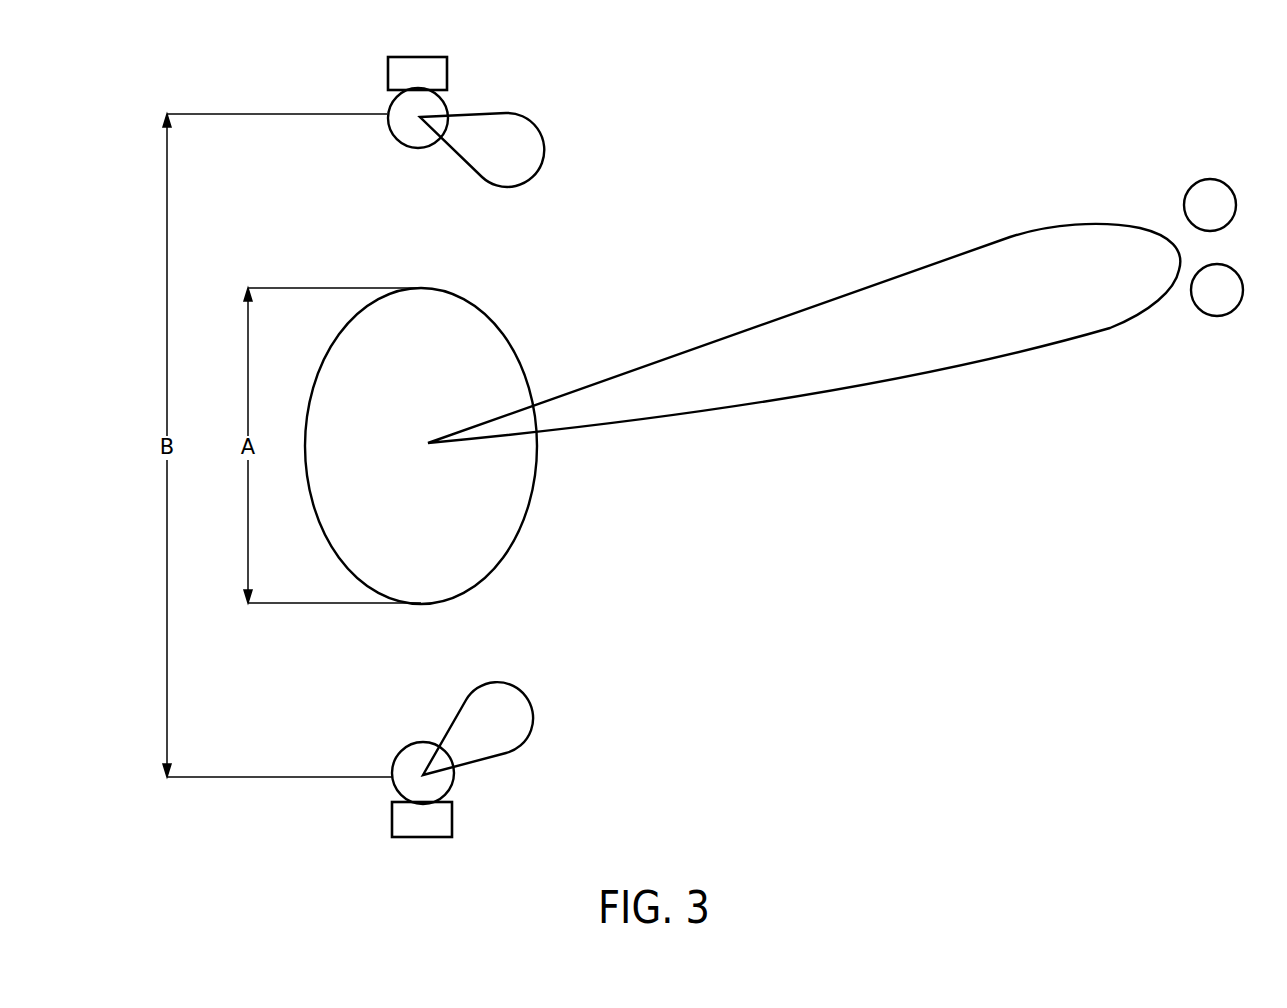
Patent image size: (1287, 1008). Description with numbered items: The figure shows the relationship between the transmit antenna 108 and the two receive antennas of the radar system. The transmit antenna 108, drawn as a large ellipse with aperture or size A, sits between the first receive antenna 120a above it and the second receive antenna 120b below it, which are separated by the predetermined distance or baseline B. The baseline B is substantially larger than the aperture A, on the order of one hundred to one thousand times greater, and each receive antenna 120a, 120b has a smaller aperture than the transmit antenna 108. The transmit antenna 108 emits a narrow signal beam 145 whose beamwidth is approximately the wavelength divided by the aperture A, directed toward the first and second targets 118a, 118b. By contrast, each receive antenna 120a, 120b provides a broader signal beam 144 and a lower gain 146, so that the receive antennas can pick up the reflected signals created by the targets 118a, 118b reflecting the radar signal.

The transmit antenna 108 is at (483, 311).
The signal beam 145 is at (828, 299).
The first target 118a is at (1204, 180).
The second target 118b is at (1216, 317).
The first receive antenna 120a is at (440, 98).
The second receive antenna 120b is at (406, 746).
The gain 146 is at (422, 57).
The signal beam 144 is at (545, 147).